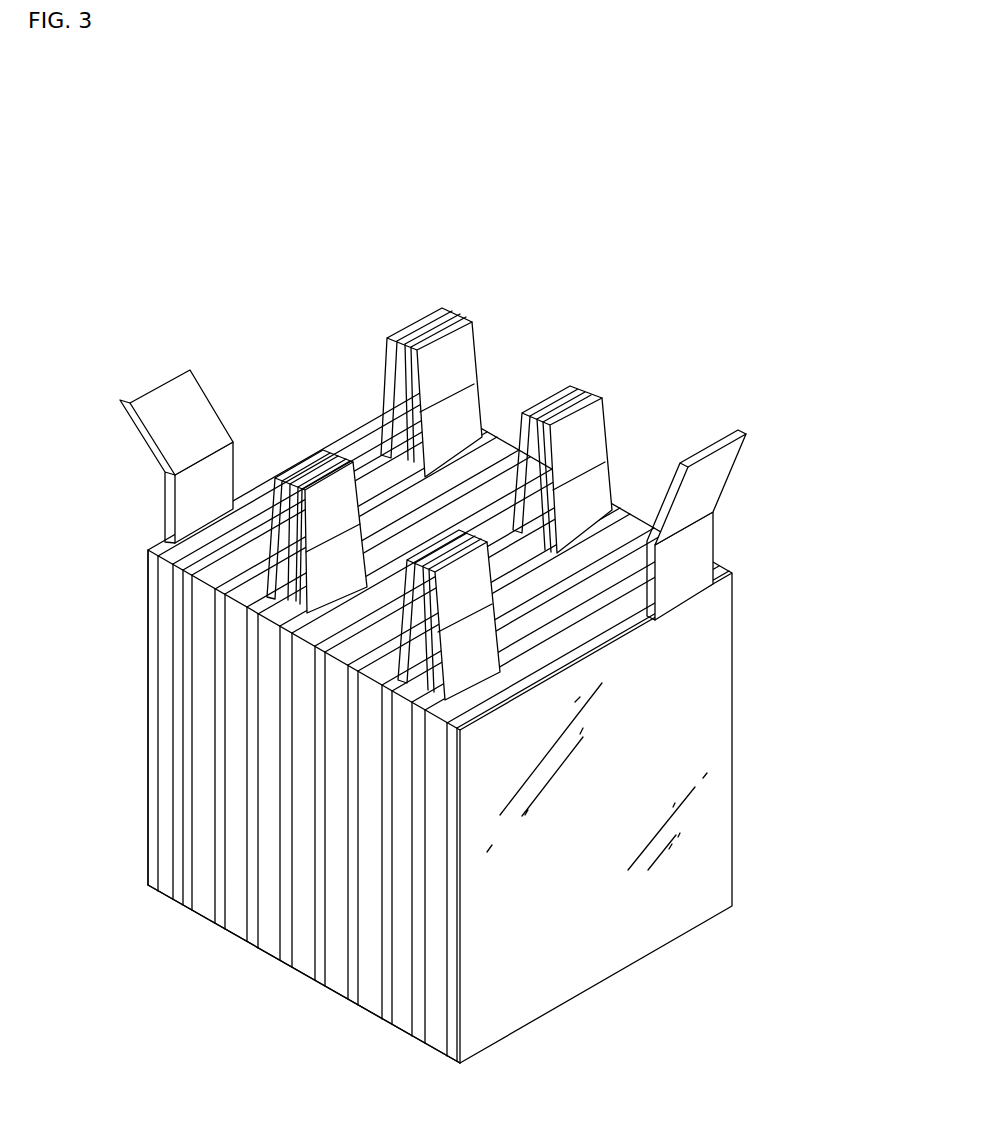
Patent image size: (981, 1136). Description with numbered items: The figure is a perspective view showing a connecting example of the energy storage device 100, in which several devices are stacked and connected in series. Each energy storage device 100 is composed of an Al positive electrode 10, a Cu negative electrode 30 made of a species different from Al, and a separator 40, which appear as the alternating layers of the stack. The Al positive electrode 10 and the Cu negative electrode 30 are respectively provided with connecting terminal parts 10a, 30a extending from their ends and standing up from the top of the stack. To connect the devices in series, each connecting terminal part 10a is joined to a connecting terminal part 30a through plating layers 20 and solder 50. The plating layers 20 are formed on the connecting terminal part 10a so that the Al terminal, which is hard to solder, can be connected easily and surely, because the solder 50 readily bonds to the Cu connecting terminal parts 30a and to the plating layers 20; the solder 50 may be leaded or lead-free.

The energy storage device 100 is at (287, 278).
The Al positive electrode 10 is at (417, 757).
The connecting terminal part 10a is at (465, 327).
The plating layer 20 is at (440, 320).
The Cu negative electrode 30 is at (450, 869).
The connecting terminal part 30a is at (398, 338).
The separator 40 is at (168, 890).
The solder 50 is at (426, 344).